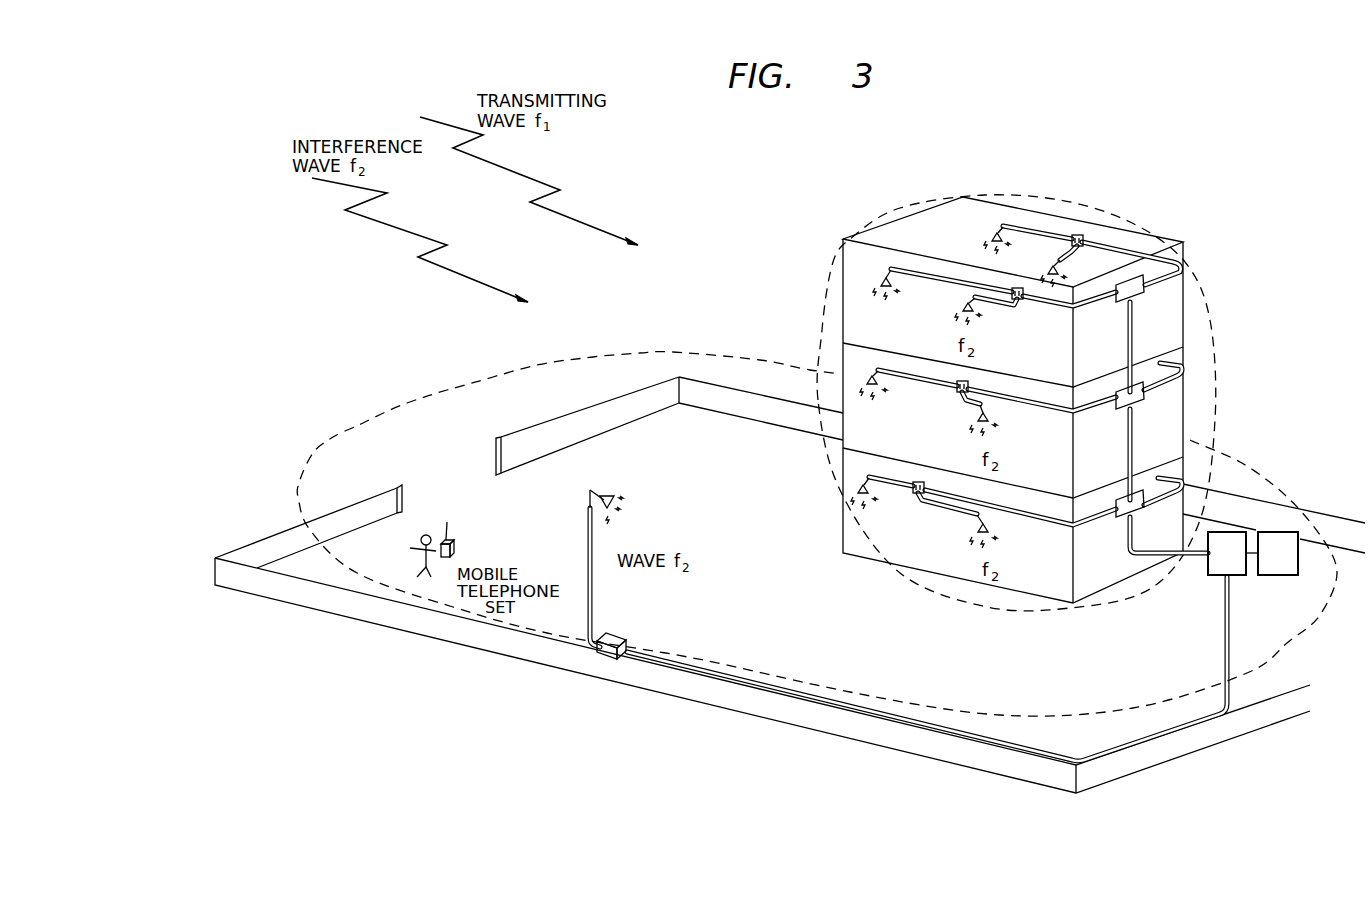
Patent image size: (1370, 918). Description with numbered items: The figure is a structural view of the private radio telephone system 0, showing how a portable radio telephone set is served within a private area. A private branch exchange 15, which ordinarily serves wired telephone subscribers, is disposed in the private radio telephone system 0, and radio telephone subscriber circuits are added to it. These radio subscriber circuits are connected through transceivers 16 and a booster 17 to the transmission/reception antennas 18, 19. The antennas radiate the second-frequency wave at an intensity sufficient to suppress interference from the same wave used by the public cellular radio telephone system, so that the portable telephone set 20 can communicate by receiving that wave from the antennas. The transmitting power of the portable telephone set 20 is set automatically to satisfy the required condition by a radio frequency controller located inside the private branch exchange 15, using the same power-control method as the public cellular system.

The private radio telephone system 0 is at (388, 418).
The private branch exchange 15 is at (1288, 532).
The transceiver 16 is at (1235, 532).
The booster 17 is at (1145, 298).
The transmission/reception antenna 18 is at (1073, 268).
The transmission/reception antenna 19 is at (893, 283).
The portable telephone set 20 is at (453, 537).